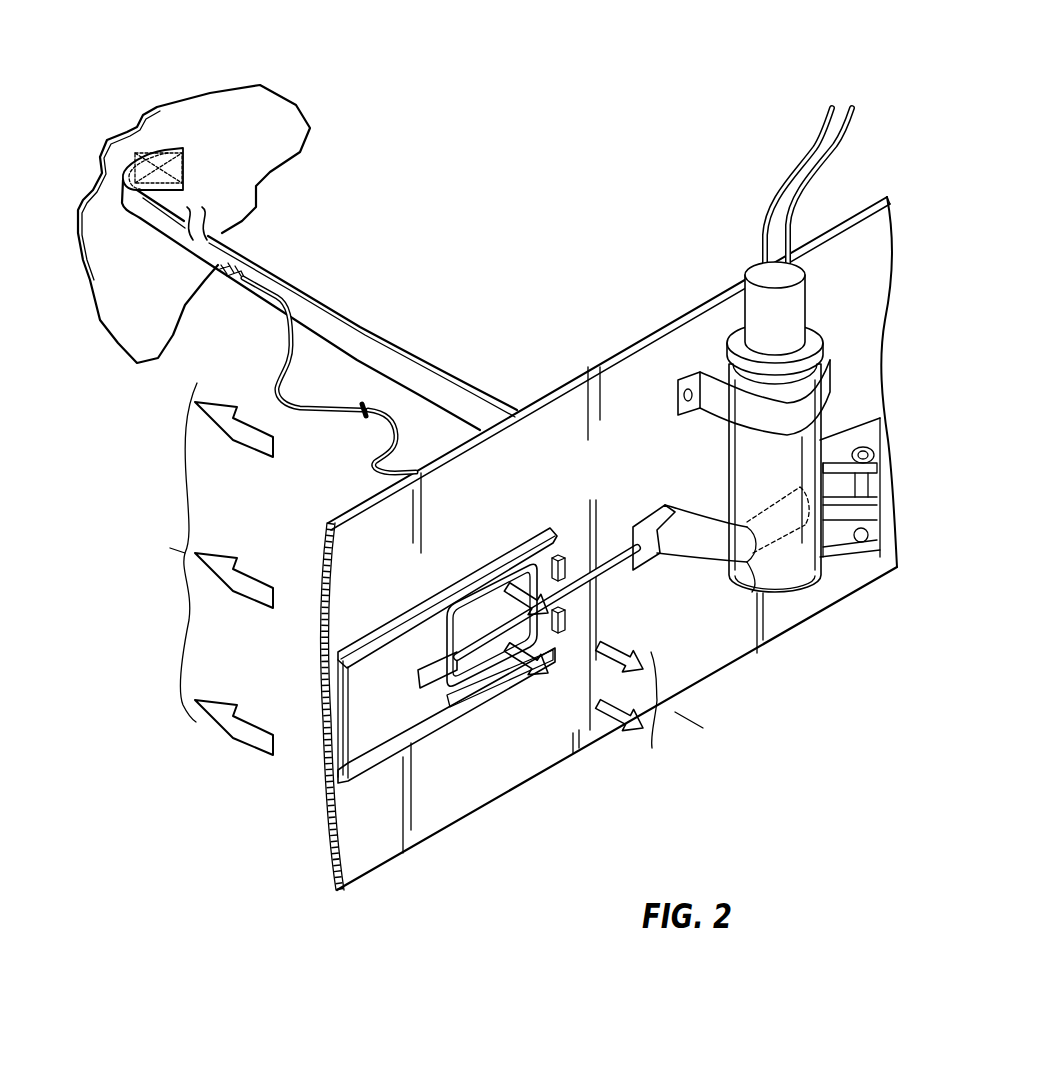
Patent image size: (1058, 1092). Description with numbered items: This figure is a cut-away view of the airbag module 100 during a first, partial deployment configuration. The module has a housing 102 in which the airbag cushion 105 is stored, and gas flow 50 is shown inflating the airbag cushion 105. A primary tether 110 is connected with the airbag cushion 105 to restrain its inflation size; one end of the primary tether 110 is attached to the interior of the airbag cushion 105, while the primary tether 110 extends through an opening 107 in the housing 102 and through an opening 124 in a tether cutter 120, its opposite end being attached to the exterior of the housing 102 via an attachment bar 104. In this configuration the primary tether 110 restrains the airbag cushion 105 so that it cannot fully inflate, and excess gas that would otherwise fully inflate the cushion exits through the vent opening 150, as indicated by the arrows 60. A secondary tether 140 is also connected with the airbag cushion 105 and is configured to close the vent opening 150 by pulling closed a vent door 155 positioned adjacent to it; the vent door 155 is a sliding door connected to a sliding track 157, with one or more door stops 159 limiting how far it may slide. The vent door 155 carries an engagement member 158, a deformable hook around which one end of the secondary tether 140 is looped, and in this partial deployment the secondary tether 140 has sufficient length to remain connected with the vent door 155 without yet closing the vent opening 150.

The airbag module 100 is at (636, 70).
The housing 102 is at (847, 253).
The attachment bar 104 is at (860, 480).
The airbag cushion 105 is at (270, 108).
The opening 107 is at (662, 558).
The primary tether 110 is at (383, 355).
The tether cutter 120 is at (807, 446).
The opening 124 is at (747, 565).
The secondary tether 140 is at (282, 370).
The vent opening 150 is at (488, 672).
The vent door 155 is at (362, 712).
The sliding track 157 is at (370, 765).
The engagement member 158 is at (437, 680).
The door stops 159 is at (563, 633).
The gas flow 50 is at (220, 727).
The arrows 60 is at (624, 724).